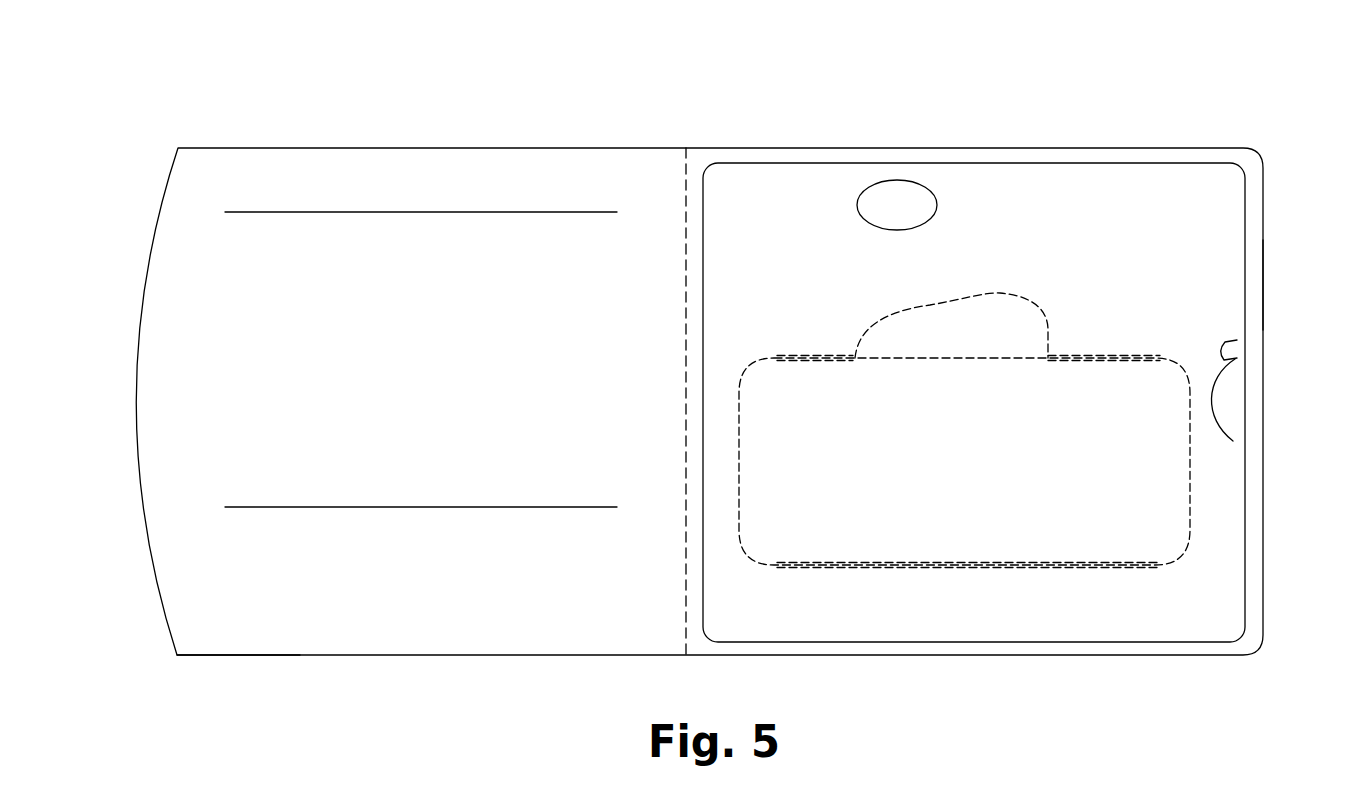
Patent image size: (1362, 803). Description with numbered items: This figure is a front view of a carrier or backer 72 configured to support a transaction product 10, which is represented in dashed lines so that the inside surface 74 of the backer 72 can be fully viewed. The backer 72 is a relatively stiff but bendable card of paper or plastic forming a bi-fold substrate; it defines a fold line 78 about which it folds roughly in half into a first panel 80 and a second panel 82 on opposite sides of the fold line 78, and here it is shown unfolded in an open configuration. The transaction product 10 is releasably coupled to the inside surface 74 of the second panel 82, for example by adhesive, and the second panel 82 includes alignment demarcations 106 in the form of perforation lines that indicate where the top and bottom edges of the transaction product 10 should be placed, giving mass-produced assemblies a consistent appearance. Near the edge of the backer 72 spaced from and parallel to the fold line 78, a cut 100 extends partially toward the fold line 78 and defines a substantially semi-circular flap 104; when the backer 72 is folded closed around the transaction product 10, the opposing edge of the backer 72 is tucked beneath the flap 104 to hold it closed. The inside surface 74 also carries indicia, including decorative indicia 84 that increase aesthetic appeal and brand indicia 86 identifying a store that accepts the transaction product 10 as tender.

The backer 72 is at (699, 354).
The inside surface 74 is at (238, 682).
The fold line 78 is at (708, 371).
The first panel 80 is at (410, 296).
The second panel 82 is at (974, 367).
The decorative indicia 84 is at (1281, 285).
The brand indicia 86 is at (897, 165).
The transaction product 10 is at (1028, 429).
The cut 100 is at (1271, 342).
The flap 104 is at (1268, 400).
The alignment demarcations 106 is at (968, 638).